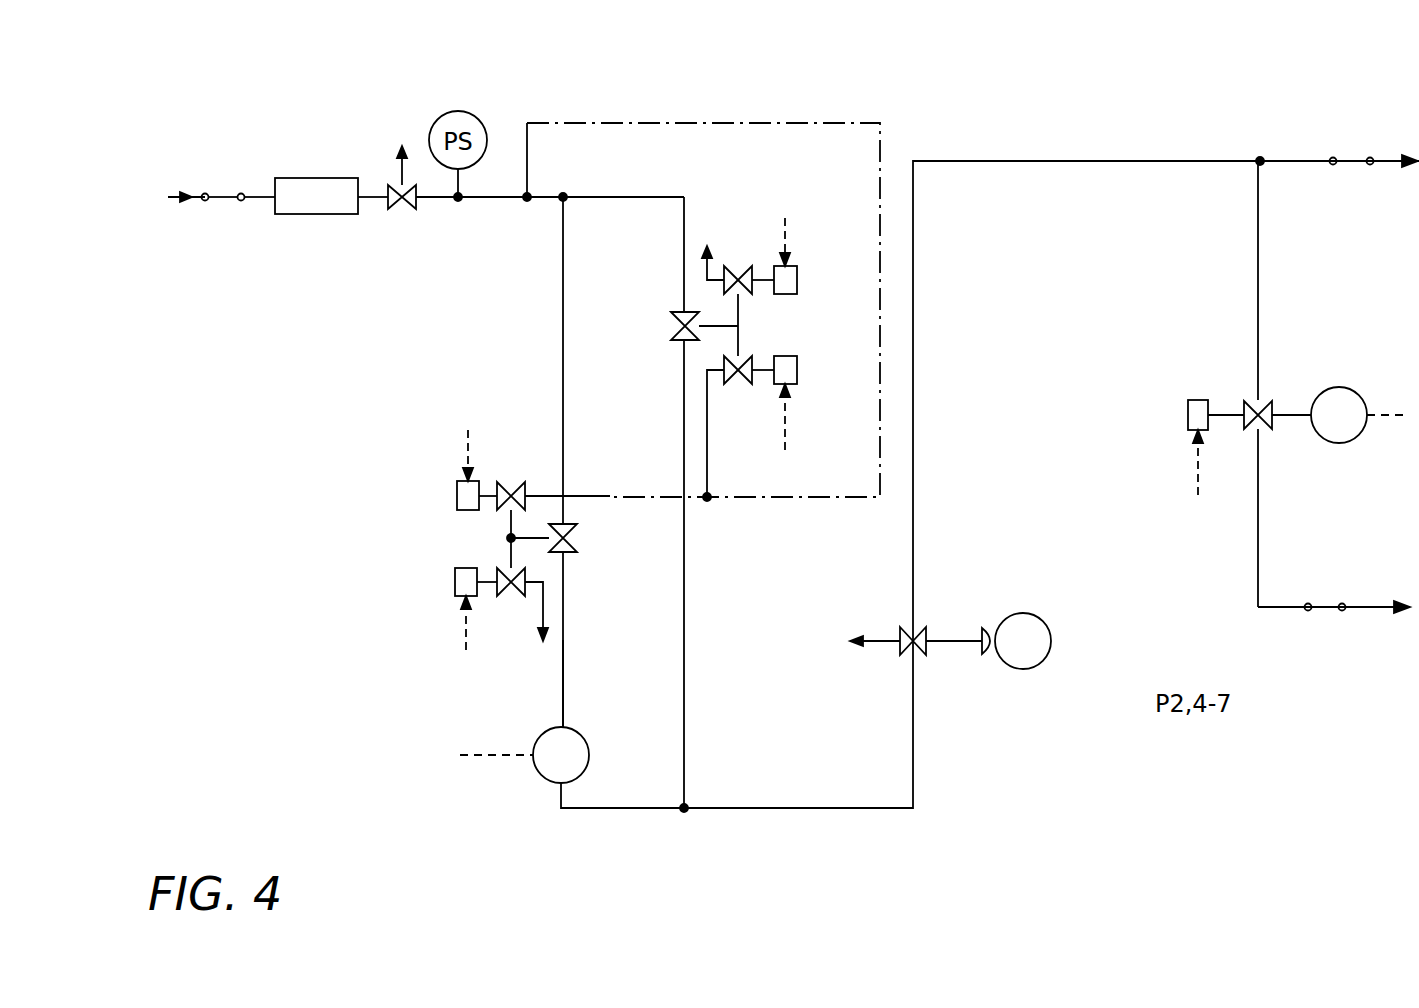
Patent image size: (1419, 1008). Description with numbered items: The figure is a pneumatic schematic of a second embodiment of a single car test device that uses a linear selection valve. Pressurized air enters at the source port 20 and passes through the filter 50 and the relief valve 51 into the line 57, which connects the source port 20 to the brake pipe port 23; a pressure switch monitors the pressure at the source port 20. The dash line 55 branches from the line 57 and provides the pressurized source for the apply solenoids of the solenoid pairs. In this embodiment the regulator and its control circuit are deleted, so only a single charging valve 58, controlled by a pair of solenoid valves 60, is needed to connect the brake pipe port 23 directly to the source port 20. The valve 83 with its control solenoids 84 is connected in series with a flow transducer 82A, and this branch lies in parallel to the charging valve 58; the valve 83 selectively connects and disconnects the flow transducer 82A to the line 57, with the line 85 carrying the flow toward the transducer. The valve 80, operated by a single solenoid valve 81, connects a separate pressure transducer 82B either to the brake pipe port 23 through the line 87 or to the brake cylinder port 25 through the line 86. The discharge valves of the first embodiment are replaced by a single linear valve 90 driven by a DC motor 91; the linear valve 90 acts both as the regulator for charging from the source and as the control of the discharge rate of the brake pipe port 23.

The source port 20 is at (178, 194).
The filter 50 is at (320, 207).
The relief valve 51 is at (390, 206).
The dash line 55 is at (880, 137).
The line 57 is at (545, 200).
The charging valve 58 is at (672, 318).
The pair of solenoid valves 60 is at (796, 320).
The valve 80 is at (1248, 400).
The single solenoid valve 81 is at (1158, 414).
The flow transducer 82A is at (541, 777).
The pressure transducer 82B is at (1341, 443).
The valve 83 is at (578, 538).
The control solenoids 84 is at (451, 539).
The line 85 is at (562, 670).
The line 86 is at (1258, 558).
The line 87 is at (1258, 342).
The linear valve 90 is at (905, 657).
The DC motor 91 is at (1045, 660).
The brake pipe port 23 is at (1372, 158).
The brake cylinder port 25 is at (1342, 612).